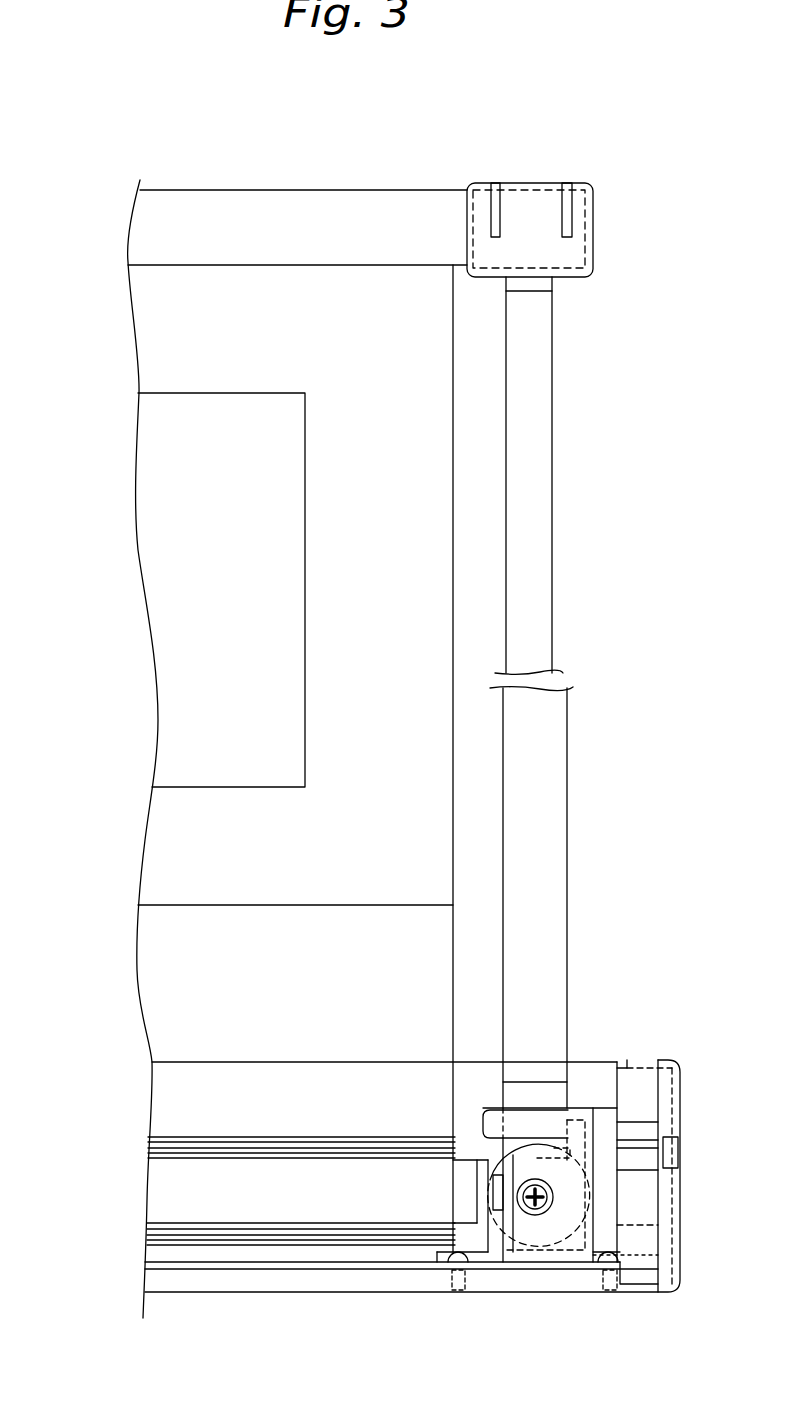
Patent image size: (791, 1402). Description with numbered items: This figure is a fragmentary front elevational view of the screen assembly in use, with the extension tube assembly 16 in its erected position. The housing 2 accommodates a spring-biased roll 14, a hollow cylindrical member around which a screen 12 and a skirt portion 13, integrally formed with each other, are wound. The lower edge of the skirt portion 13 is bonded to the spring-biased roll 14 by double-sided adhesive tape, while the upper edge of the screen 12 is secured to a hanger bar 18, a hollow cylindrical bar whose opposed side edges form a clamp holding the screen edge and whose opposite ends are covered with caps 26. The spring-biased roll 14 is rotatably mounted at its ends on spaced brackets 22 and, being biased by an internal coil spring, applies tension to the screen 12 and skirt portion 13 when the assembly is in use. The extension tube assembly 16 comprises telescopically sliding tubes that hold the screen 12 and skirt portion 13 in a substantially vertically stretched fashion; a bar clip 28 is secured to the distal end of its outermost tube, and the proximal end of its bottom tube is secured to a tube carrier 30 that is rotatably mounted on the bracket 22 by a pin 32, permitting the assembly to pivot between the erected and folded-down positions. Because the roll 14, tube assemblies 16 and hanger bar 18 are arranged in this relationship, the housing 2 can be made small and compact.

The housing 2 is at (684, 1054).
The screen 12 is at (165, 862).
The skirt portion 13 is at (172, 998).
The spring-biased roll 14 is at (175, 1188).
The extension tube assembly 16 is at (555, 632).
The hanger bar 18 is at (355, 200).
The bracket 22 is at (510, 1263).
The cap 26 is at (494, 185).
The bar clip 28 is at (567, 253).
The tube carrier 30 is at (560, 1097).
The pin 32 is at (540, 1203).